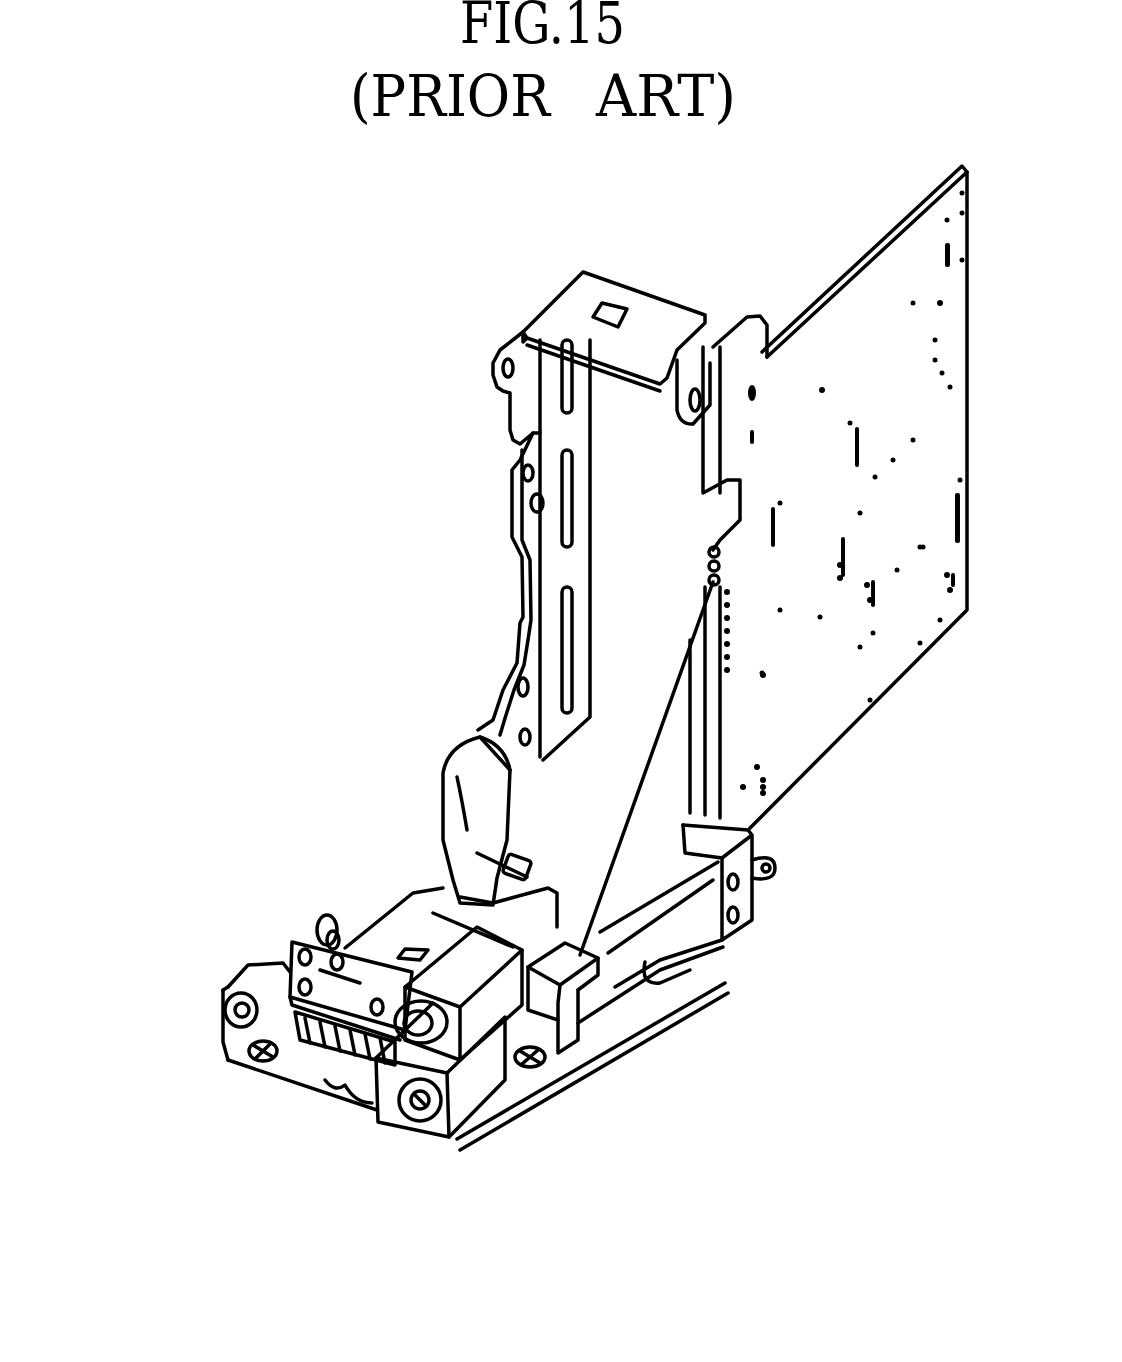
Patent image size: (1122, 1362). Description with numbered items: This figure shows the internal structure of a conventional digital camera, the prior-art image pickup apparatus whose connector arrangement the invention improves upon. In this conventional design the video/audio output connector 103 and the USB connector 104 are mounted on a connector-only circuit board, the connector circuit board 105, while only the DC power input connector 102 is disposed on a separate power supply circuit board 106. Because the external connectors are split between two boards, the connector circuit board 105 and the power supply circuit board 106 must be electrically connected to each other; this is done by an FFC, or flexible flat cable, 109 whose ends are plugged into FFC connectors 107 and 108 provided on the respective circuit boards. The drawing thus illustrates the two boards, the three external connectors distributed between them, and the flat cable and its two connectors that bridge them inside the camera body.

The DC power input connector 102 is at (473, 1080).
The video/audio output connector 103 is at (483, 1002).
The USB connector 104 is at (305, 1057).
The connector circuit board 105 is at (357, 987).
The power supply circuit board 106 is at (417, 925).
The FFC connector 107 is at (592, 950).
The FFC connector 108 is at (415, 890).
The FFC (flexible flat cable) 109 is at (693, 957).